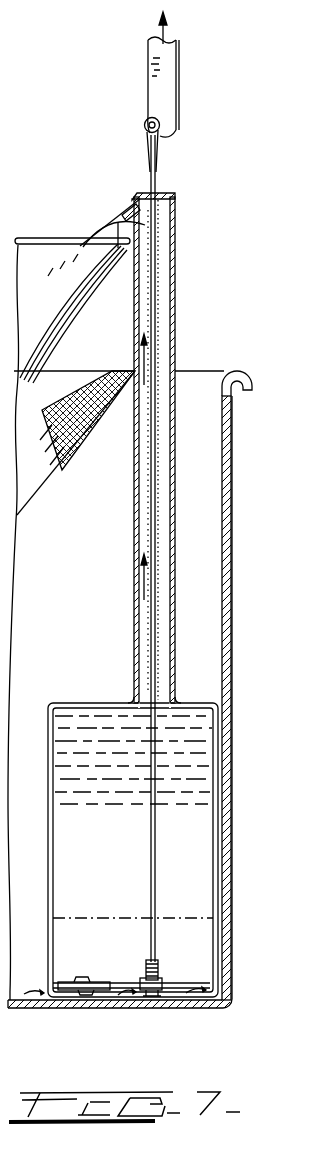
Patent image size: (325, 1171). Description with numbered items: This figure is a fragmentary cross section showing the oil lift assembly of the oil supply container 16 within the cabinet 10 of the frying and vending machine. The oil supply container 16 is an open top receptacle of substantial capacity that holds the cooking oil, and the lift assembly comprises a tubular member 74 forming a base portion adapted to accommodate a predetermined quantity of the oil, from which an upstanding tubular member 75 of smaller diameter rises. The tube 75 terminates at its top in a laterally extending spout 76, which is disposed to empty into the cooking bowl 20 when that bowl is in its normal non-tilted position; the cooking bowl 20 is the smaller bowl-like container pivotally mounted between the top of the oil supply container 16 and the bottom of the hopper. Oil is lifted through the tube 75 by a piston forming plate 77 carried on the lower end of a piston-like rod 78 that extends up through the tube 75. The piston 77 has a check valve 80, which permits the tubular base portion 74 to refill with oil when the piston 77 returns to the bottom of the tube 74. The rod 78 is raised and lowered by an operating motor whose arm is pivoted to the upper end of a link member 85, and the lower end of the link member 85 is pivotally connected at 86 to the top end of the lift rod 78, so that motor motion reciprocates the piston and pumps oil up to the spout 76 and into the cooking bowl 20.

The cabinet 10 is at (0, 233).
The oil supply container 16 is at (228, 609).
The cooking bowl 20 is at (67, 316).
The tubular member 74 is at (216, 838).
The upstanding tubular member 75 is at (172, 338).
The spout 76 is at (118, 246).
The piston forming plate 77 is at (173, 977).
The piston-like rod 78 is at (152, 662).
The check valve 80 is at (75, 983).
The link member 85 is at (168, 98).
The pivotal connection 86 is at (156, 125).